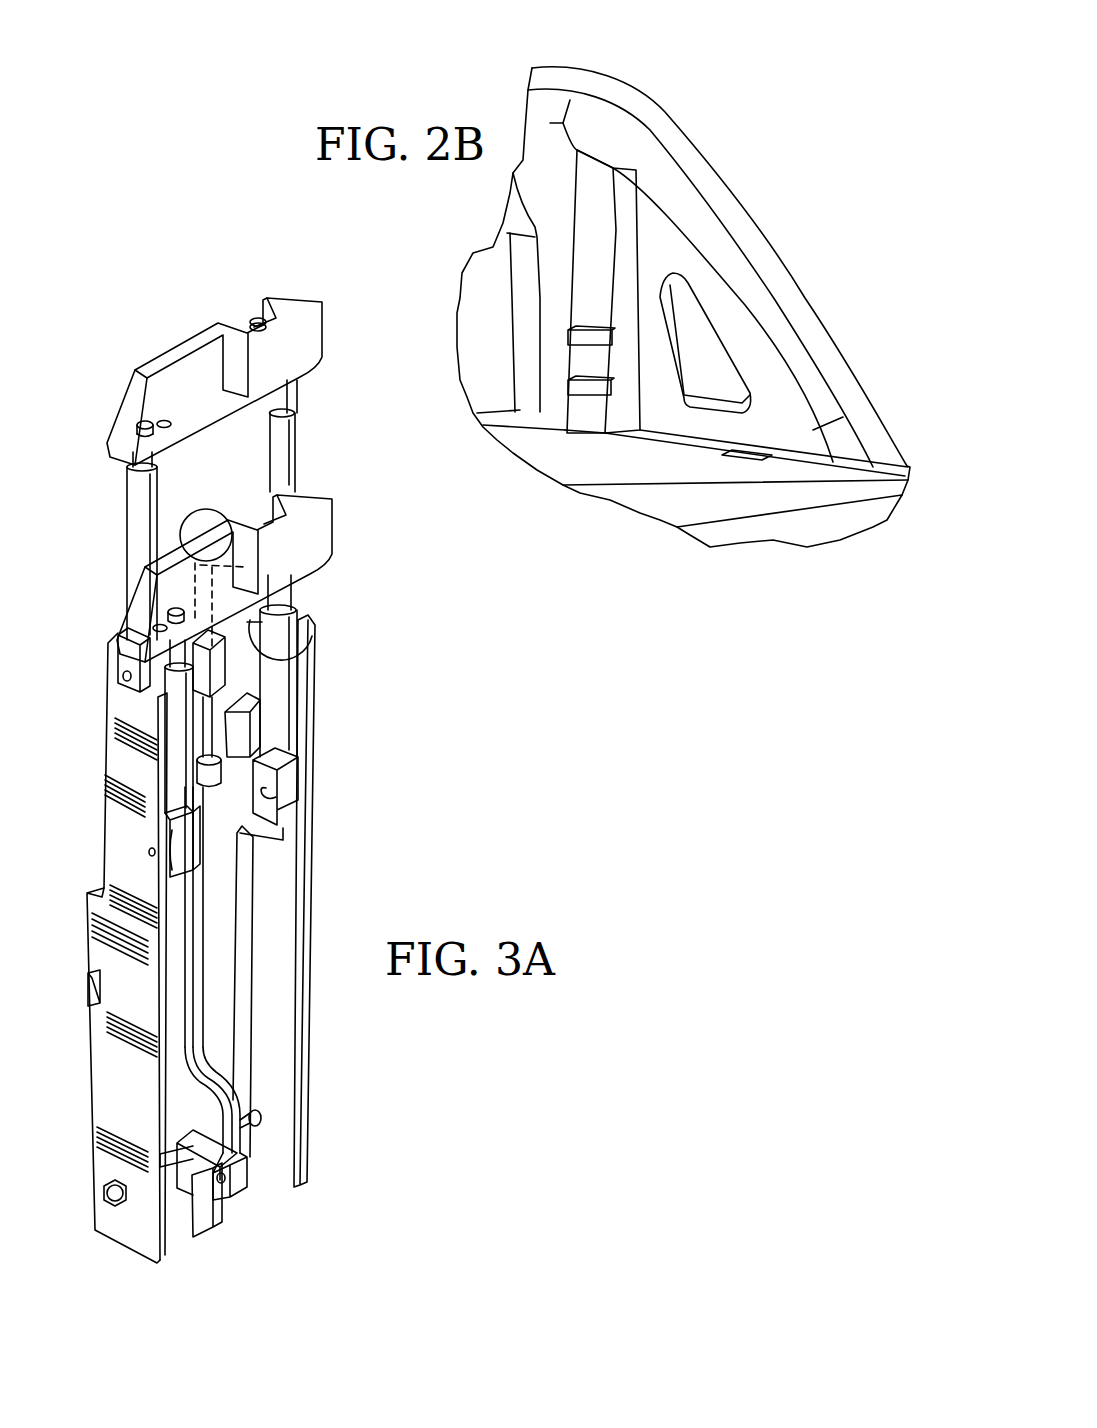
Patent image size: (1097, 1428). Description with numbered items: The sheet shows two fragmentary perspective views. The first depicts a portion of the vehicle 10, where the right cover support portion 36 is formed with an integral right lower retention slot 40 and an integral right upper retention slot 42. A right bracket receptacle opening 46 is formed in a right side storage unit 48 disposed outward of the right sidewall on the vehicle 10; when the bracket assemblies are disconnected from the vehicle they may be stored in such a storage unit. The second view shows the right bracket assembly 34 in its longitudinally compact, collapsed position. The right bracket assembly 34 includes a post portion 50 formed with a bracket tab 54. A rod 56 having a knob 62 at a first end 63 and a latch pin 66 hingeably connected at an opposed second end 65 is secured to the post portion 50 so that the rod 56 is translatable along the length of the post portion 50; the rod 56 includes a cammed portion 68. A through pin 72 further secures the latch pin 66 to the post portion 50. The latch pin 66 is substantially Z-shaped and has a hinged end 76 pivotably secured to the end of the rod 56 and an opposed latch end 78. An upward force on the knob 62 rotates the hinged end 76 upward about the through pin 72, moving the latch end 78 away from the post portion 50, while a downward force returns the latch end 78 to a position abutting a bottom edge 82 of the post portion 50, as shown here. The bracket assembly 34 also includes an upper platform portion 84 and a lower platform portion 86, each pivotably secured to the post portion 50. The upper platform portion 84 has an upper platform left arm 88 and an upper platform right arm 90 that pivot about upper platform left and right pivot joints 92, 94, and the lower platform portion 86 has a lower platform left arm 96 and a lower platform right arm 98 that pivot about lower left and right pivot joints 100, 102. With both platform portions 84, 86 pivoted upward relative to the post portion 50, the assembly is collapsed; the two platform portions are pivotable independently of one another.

In FIG. 2B, the vehicle 10 is at (636, 82).
In FIG. 2B, the right cover support portion 36 is at (602, 190).
In FIG. 2B, the right upper retention slot 42 is at (583, 330).
In FIG. 2B, the right lower retention slot 40 is at (583, 380).
In FIG. 2B, the right bracket receptacle opening 46 is at (754, 452).
In FIG. 2B, the right side storage unit 48 is at (793, 463).
In FIG. 3A, the right bracket assembly 34 is at (117, 722).
In FIG. 3A, the post portion 50 is at (120, 1097).
In FIG. 3A, the bracket tab 54 is at (88, 990).
In FIG. 3A, the rod 56 is at (197, 923).
In FIG. 3A, the knob 62 is at (212, 520).
In FIG. 3A, the first end 63 is at (233, 538).
In FIG. 3A, the second end 65 is at (247, 1187).
In FIG. 3A, the latch pin 66 is at (203, 1227).
In FIG. 3A, the cammed portion 68 is at (243, 1103).
In FIG. 3A, the through pin 72 is at (258, 1134).
In FIG. 3A, the hinged end 76 is at (223, 1193).
In FIG. 3A, the latch end 78 is at (180, 1240).
In FIG. 3A, the bottom edge 82 is at (170, 1200).
In FIG. 3A, the upper platform portion 84 is at (303, 415).
In FIG. 3A, the lower platform portion 86 is at (283, 598).
In FIG. 3A, the upper platform left arm 88 is at (133, 545).
In FIG. 3A, the upper platform right arm 90 is at (300, 443).
In FIG. 3A, the upper platform left pivot joint 92 is at (122, 677).
In FIG. 3A, the upper platform right pivot joint 94 is at (253, 643).
In FIG. 3A, the lower platform left arm 96 is at (173, 767).
In FIG. 3A, the lower platform right arm 98 is at (283, 705).
In FIG. 3A, the lower left pivot joint 100 is at (148, 853).
In FIG. 3A, the lower right pivot joint 102 is at (262, 812).